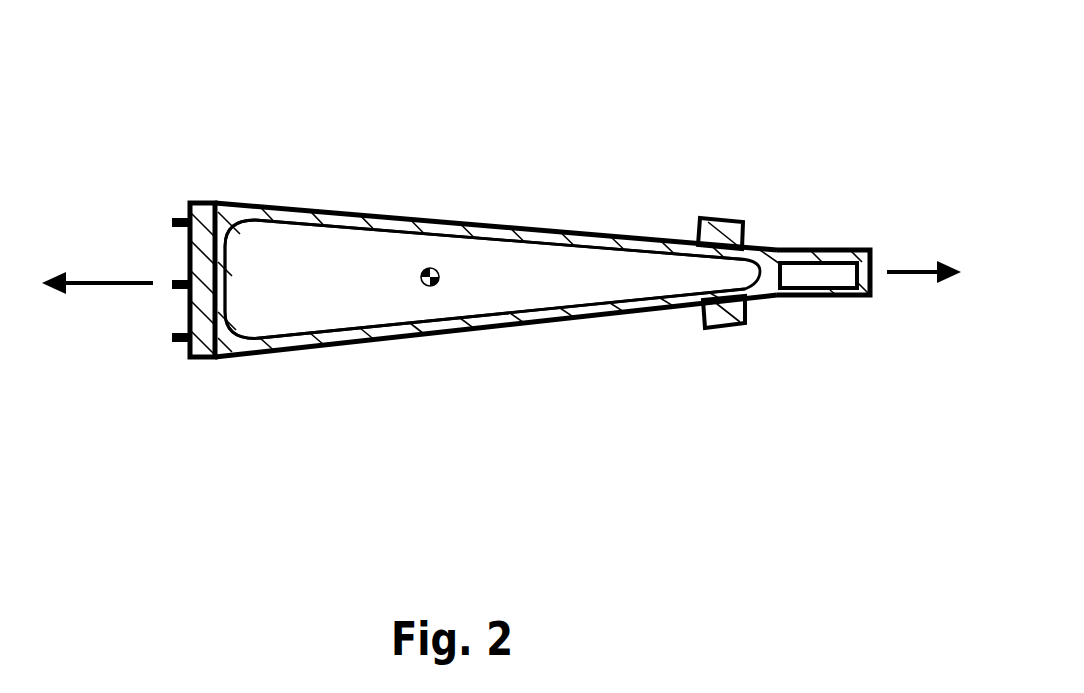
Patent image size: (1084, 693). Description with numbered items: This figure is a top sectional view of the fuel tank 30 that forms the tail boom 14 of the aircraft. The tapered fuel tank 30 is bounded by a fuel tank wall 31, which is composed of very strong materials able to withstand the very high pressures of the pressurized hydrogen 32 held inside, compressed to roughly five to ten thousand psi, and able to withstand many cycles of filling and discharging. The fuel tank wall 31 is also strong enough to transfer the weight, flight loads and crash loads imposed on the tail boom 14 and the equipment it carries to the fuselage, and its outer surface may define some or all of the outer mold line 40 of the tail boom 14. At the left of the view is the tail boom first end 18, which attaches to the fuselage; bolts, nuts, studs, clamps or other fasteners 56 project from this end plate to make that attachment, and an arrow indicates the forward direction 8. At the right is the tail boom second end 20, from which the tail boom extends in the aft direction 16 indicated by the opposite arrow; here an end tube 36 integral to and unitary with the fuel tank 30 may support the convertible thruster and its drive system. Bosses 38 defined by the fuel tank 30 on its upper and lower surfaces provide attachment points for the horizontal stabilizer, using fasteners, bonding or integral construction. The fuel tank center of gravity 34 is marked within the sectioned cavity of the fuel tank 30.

The forward direction 8 is at (102, 283).
The tail boom 14 is at (530, 229).
The aft direction 16 is at (918, 272).
The tail boom first end 18 is at (205, 210).
The tail boom second end 20 is at (775, 248).
The fuel tank 30 is at (620, 272).
The fuel tank wall 31 is at (533, 318).
The pressurized hydrogen 32 is at (282, 287).
The fuel tank center of gravity 34 is at (430, 286).
The end tube 36 is at (813, 275).
The bosses 38 is at (708, 217).
The outer mold line 40 is at (355, 215).
The fasteners 56 is at (178, 343).